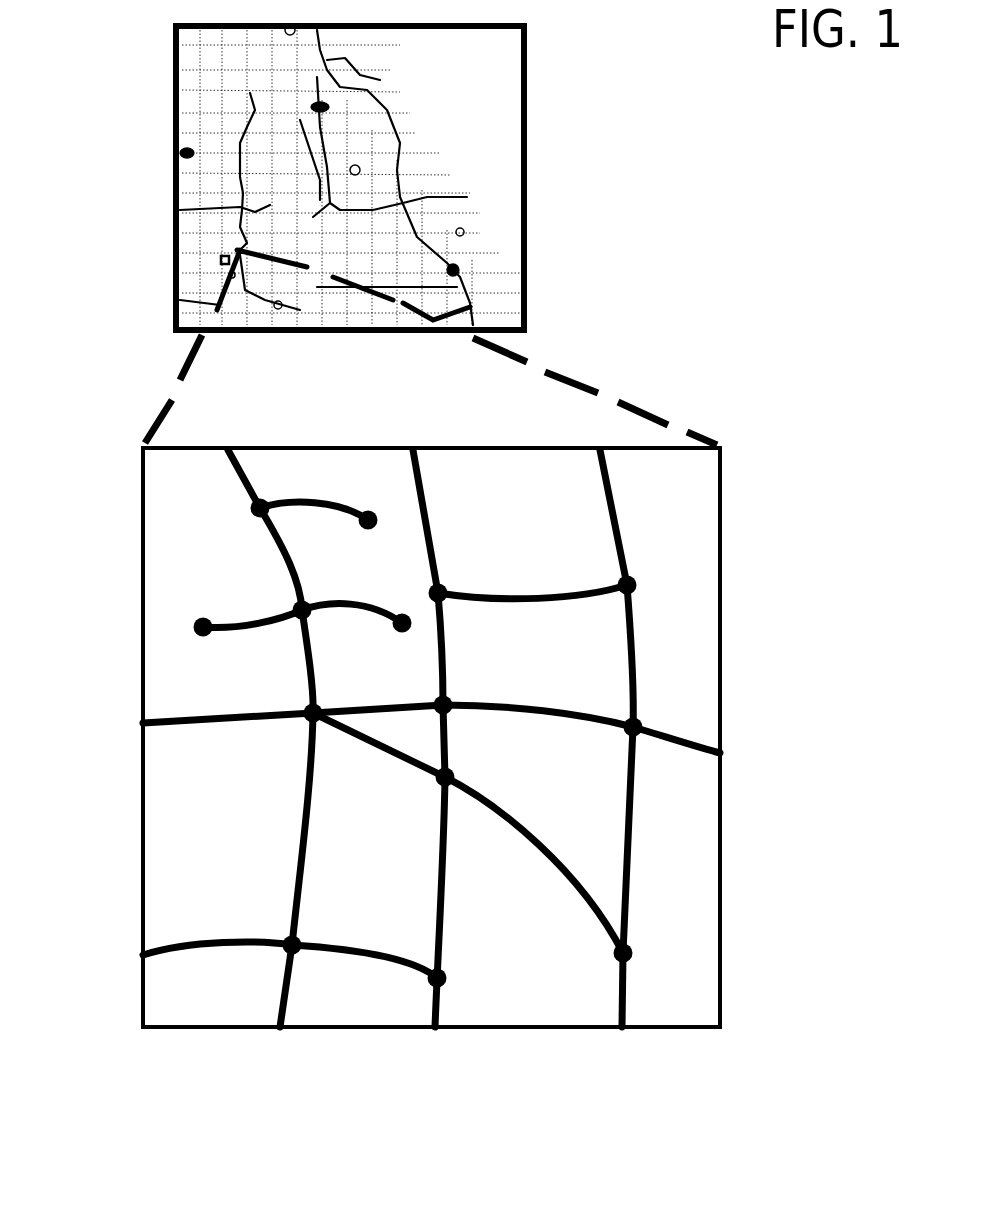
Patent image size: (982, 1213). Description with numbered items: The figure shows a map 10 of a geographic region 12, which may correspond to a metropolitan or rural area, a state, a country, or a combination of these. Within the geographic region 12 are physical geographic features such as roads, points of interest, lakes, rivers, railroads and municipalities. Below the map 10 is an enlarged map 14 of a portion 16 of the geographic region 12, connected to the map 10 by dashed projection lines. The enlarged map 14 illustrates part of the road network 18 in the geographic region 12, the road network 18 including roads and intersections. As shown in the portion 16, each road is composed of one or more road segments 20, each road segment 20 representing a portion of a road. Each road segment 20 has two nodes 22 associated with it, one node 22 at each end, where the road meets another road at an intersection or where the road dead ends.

The map 10 is at (162, 205).
The geographic region 12 is at (478, 67).
The enlarged map 14 is at (730, 511).
The portion 16 is at (543, 994).
The road network 18 is at (236, 743).
The road segment 20 is at (243, 637).
The node 22 is at (197, 590).